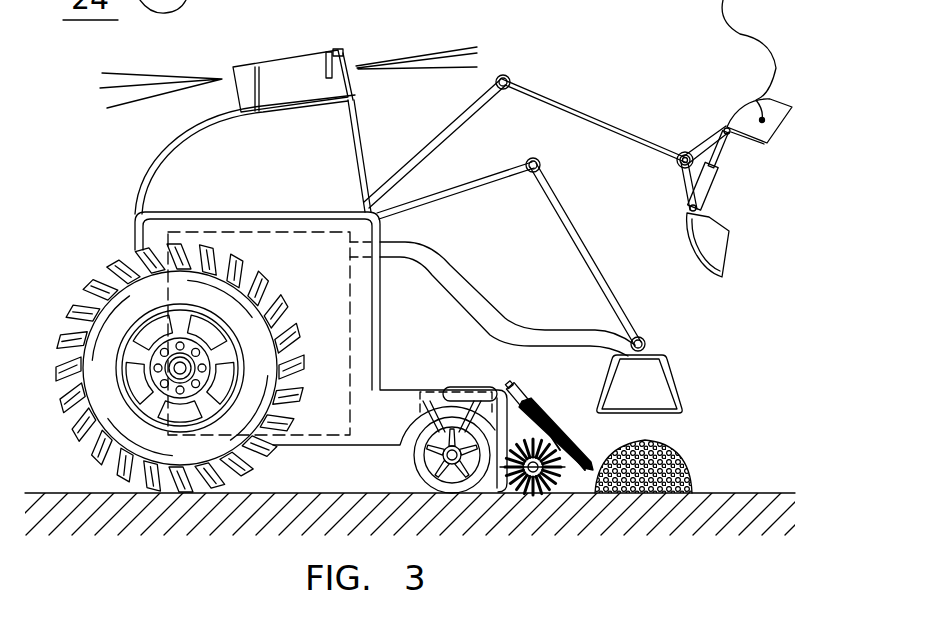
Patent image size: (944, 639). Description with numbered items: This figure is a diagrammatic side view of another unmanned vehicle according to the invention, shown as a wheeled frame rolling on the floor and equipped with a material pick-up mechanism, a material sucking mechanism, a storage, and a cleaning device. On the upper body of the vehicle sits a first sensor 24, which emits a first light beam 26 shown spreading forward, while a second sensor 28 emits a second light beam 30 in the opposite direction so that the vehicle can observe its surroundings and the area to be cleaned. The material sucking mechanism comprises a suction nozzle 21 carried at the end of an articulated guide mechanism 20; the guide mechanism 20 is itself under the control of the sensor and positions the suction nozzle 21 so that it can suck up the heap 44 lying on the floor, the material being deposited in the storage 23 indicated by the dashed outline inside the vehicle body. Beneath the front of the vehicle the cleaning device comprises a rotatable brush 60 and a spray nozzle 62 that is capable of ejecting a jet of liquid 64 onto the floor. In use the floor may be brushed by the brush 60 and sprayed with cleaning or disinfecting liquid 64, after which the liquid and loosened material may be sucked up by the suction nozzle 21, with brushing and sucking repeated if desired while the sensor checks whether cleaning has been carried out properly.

The guide mechanism 20 is at (592, 263).
The suction nozzle 21 is at (650, 395).
The storage 23 is at (318, 407).
The first sensor 24 is at (259, 92).
The first light beam 26 is at (428, 57).
The sensor 28 is at (328, 70).
The second light beam 30 is at (165, 83).
The heap 44 is at (670, 453).
The rotatable brush 60 is at (546, 478).
The spray nozzle 62 is at (515, 382).
The jet of liquid 64 is at (530, 401).